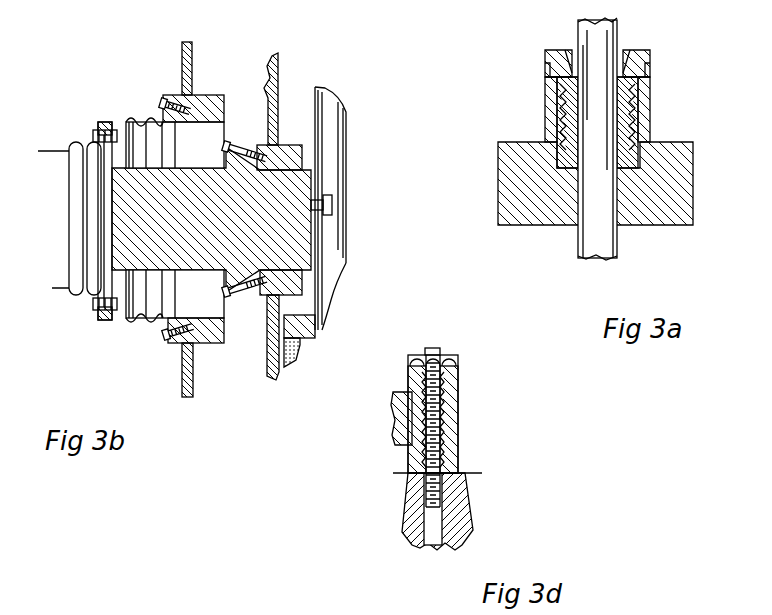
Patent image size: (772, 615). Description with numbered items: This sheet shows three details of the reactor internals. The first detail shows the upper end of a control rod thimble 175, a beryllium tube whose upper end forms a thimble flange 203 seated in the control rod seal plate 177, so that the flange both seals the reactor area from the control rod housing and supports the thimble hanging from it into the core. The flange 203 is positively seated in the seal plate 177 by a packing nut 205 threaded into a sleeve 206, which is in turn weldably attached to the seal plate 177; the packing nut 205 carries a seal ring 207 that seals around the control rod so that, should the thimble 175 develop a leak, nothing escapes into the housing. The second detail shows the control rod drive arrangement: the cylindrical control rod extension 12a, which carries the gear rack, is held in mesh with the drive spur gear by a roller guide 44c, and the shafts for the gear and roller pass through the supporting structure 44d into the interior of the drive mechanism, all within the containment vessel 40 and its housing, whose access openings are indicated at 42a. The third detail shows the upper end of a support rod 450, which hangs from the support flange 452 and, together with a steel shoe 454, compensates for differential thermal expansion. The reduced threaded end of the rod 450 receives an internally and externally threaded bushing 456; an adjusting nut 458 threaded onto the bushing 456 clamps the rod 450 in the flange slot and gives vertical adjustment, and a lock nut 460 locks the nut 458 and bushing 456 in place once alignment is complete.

In FIG. 3B, the containment vessel 40 is at (182, 78).
In FIG. 3B, the support rod 42a is at (272, 70).
In FIG. 3B, the control rod extension 12a is at (346, 138).
In FIG. 3B, the roller guide 44c is at (332, 200).
In FIG. 3B, the supporting structure 44d is at (211, 219).
In FIG. 3A, the packing nut 205 is at (545, 60).
In FIG. 3A, the seal ring 207 is at (552, 72).
In FIG. 3A, the thimble flange 203 is at (648, 85).
In FIG. 3A, the sleeve 206 is at (650, 122).
In FIG. 3A, the control rod seal plate 177 is at (524, 142).
In FIG. 3A, the control rod thimble 175 is at (578, 235).
In FIG. 3D, the lock nut 460 is at (445, 355).
In FIG. 3D, the adjusting nut 458 is at (458, 382).
In FIG. 3D, the bushing 456 is at (460, 428).
In FIG. 3D, the support flange 452 is at (398, 442).
In FIG. 3D, the steel shoe 454 is at (410, 505).
In FIG. 3D, the support rod 450 is at (447, 517).